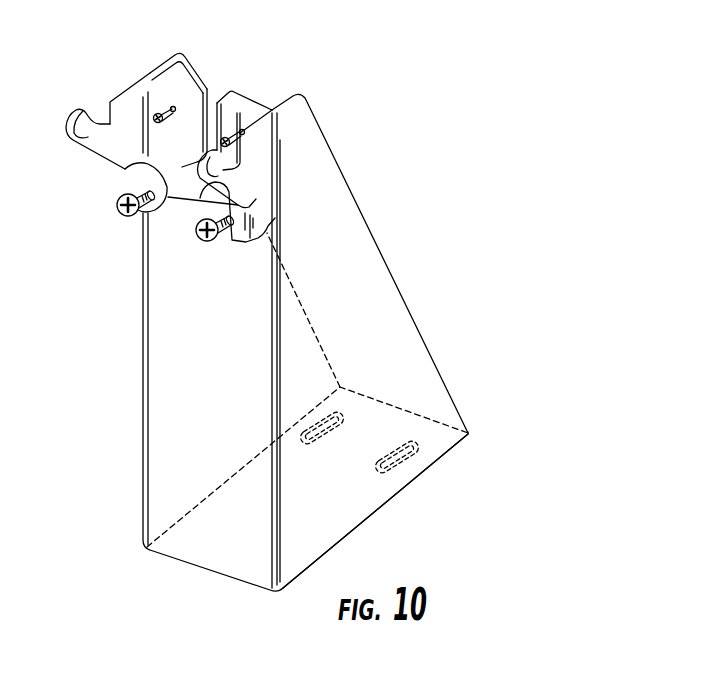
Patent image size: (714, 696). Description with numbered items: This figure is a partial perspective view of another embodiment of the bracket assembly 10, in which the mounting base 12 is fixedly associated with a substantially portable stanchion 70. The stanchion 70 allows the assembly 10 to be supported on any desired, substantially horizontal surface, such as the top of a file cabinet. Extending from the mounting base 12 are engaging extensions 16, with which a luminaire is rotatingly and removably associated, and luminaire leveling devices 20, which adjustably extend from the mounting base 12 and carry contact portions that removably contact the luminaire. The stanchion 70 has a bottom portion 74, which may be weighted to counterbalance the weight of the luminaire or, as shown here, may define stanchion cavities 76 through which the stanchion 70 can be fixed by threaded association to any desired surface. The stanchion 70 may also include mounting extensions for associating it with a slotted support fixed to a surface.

The bracket assembly 10 is at (337, 97).
The mounting base 12 is at (177, 193).
The engaging extension 16 is at (86, 134).
The luminaire leveling device 20 is at (127, 220).
The stanchion 70 is at (370, 285).
The bottom portion 74 is at (383, 503).
The stanchion cavity 76 is at (318, 421).